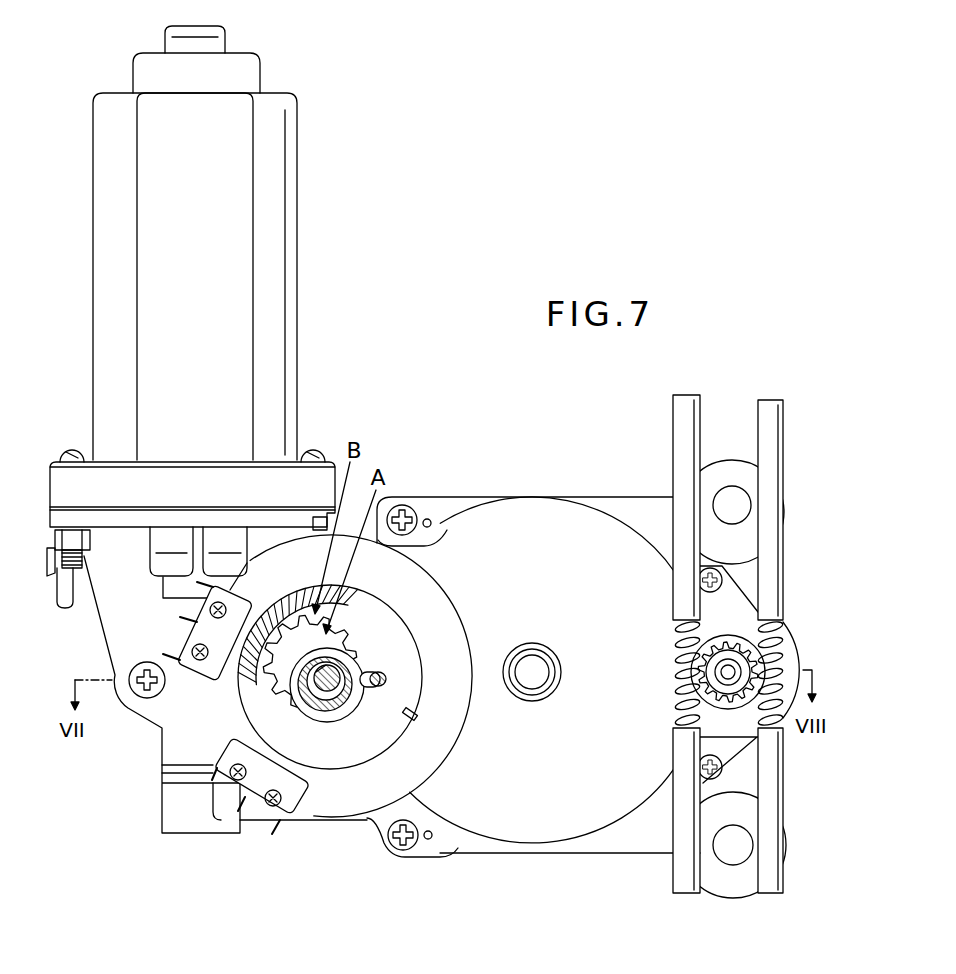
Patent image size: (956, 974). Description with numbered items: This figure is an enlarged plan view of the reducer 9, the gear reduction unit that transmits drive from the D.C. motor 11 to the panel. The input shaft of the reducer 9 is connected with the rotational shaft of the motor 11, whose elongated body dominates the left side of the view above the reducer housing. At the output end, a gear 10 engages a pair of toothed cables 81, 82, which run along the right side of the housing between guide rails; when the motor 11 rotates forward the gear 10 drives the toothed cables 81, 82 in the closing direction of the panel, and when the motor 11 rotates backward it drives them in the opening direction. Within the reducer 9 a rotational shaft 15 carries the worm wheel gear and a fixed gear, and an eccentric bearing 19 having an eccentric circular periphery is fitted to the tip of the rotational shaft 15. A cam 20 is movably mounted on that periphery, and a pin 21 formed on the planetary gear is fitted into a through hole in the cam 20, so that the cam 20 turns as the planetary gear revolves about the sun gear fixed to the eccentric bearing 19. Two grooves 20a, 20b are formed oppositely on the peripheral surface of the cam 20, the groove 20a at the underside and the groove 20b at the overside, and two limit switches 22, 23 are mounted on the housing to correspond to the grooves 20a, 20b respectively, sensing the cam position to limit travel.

The reducer 9 is at (447, 506).
The gear 10 is at (675, 628).
The D.C. motor 11 is at (297, 320).
The rotational shaft 15 is at (342, 690).
The eccentric bearing 19 is at (345, 648).
The cam 20 is at (420, 638).
The groove 20a is at (257, 607).
The groove 20b is at (414, 721).
The pin 21 is at (386, 680).
The limit switch 22 is at (203, 671).
The limit switch 23 is at (292, 803).
The toothed cable 81 is at (788, 655).
The toothed cable 82 is at (678, 694).